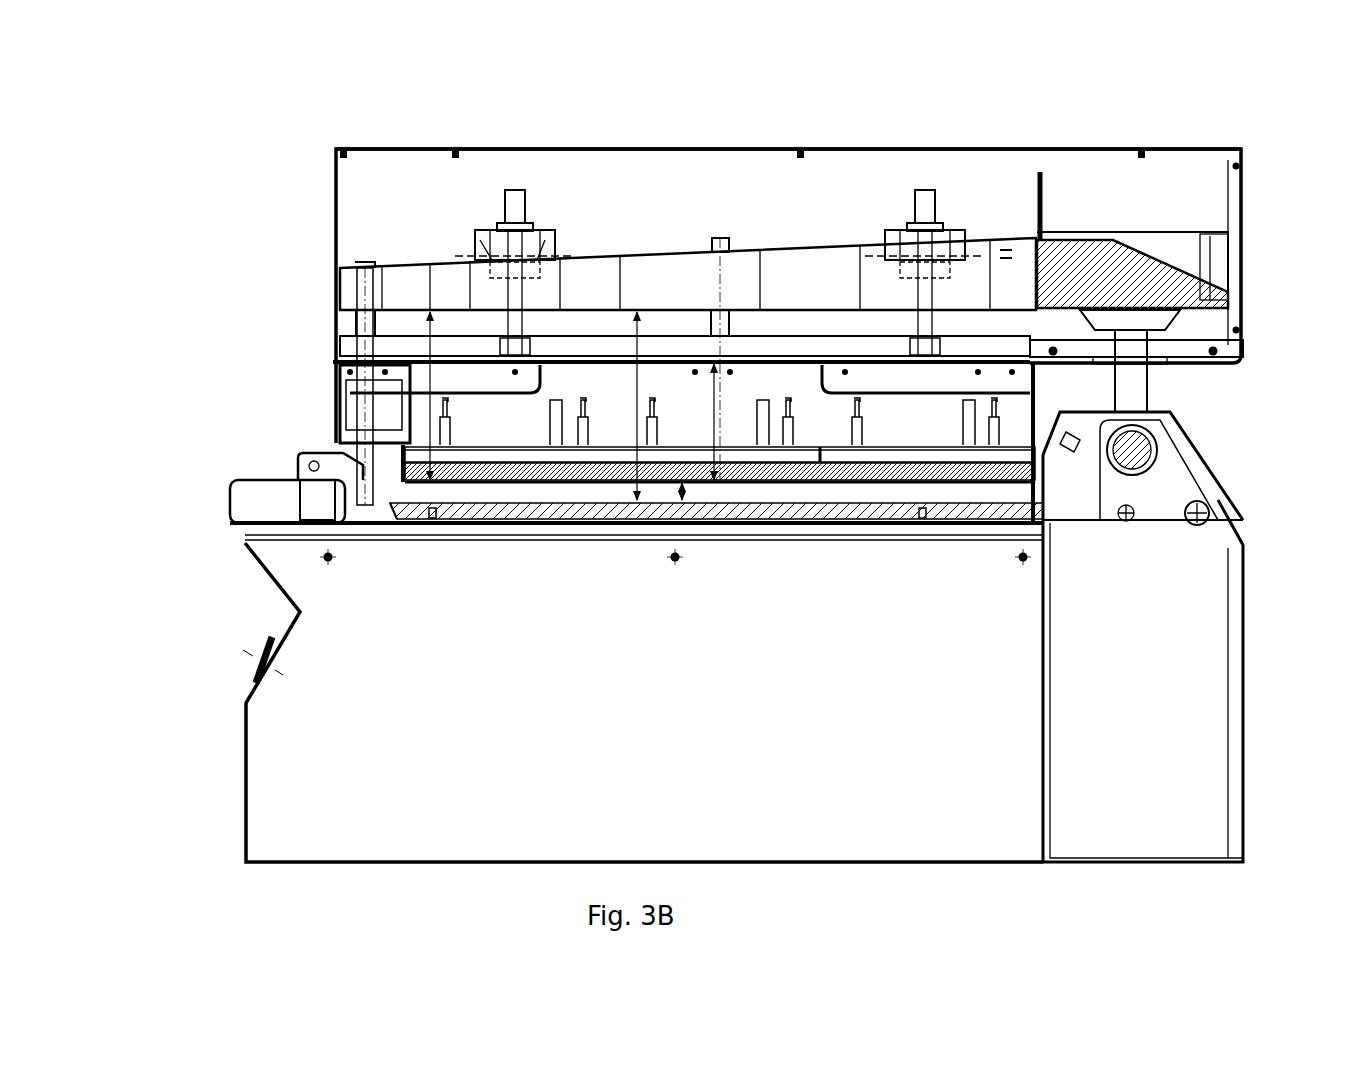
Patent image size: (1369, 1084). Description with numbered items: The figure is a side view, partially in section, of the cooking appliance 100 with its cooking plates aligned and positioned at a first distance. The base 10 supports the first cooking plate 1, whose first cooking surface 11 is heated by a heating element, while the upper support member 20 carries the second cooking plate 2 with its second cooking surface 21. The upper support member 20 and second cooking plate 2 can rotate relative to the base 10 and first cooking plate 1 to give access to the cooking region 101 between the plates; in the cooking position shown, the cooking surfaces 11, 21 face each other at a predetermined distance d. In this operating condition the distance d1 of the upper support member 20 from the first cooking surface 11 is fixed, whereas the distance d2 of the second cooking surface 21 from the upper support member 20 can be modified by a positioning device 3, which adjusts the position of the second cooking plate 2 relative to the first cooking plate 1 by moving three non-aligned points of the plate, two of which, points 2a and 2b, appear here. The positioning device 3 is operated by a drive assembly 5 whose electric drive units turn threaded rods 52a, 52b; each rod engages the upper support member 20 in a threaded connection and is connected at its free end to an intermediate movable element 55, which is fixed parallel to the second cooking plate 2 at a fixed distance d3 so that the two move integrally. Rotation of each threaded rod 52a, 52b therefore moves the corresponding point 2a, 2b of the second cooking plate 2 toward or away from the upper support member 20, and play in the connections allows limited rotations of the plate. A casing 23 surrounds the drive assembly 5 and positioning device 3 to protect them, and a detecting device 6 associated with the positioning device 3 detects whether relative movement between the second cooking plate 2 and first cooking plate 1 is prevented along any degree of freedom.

The cooking appliance 100 is at (150, 288).
The upper support member 20 is at (417, 290).
The distance d2 is at (417, 328).
The non-aligned point 2b is at (513, 480).
The second cooking surface 21 is at (443, 490).
The threaded rod 52b is at (515, 198).
The casing 23 is at (600, 145).
The distance d1 is at (618, 395).
The intermediate movable element 55 is at (668, 340).
The non-aligned point 2a is at (920, 480).
The threaded rod 52a is at (928, 195).
The detecting device 6 is at (1085, 195).
The positioning device 3 is at (1120, 212).
The drive assembly 5 is at (1200, 200).
The second cooking plate 2 is at (927, 468).
The distance d3 is at (712, 428).
The predetermined distance d is at (690, 492).
The first cooking surface 11 is at (617, 497).
The first cooking plate 1 is at (862, 510).
The cooking region 101 is at (540, 490).
The base 10 is at (303, 825).